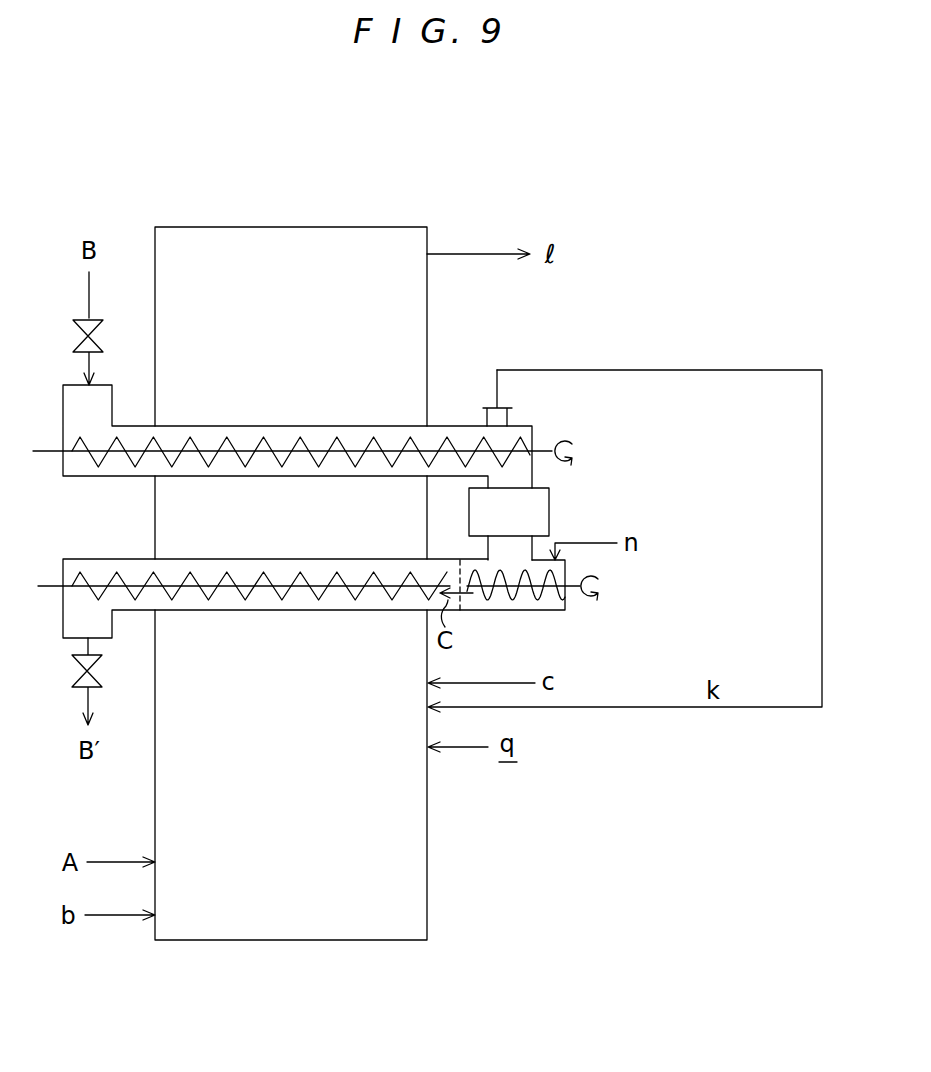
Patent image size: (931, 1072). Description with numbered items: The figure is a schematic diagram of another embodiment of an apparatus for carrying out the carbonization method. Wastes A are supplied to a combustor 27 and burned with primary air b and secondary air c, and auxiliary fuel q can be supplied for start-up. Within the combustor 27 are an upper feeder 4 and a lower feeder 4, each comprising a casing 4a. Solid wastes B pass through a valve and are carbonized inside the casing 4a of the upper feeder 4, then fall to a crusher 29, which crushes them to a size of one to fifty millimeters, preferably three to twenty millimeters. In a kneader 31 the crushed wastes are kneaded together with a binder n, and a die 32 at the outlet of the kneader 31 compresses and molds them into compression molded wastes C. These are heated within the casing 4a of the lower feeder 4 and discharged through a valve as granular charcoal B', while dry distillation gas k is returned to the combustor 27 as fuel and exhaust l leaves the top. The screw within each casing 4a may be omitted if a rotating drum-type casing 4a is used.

The combustor 27 is at (308, 227).
The feeder 4 is at (533, 440).
The casing 4a is at (287, 478).
The crusher 29 is at (550, 503).
The kneader 31 is at (567, 595).
The die 32 is at (458, 607).